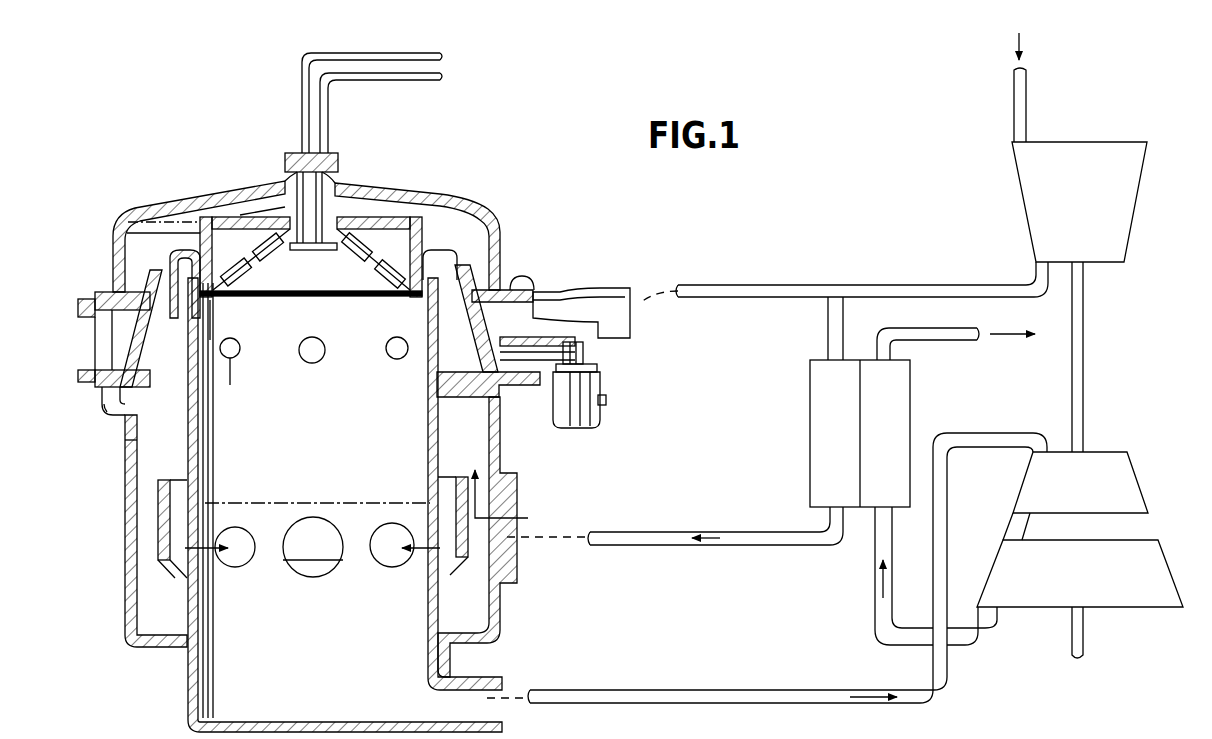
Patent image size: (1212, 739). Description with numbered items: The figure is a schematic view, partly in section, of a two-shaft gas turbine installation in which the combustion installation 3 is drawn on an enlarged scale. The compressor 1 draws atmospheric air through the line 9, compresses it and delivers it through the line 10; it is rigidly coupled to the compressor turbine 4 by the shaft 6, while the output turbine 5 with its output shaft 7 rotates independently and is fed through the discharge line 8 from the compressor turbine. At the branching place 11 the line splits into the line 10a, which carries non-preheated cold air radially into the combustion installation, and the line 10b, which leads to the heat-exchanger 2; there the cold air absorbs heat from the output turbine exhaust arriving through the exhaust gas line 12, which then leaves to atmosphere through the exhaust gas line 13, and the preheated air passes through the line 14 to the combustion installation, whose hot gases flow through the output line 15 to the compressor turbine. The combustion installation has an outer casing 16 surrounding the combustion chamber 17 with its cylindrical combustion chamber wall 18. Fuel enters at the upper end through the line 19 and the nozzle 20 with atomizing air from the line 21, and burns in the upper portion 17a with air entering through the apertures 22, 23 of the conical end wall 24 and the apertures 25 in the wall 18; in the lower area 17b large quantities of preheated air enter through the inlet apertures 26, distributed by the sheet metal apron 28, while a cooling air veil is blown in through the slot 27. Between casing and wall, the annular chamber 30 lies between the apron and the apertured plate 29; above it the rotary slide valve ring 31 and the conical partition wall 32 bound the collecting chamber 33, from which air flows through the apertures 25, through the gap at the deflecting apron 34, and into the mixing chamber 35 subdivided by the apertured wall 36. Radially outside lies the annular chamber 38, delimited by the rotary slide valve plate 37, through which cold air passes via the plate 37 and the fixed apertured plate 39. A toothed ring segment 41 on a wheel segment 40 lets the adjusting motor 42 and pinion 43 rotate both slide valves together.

The compressor 1 is at (1022, 174).
The heat-exchanger 2 is at (811, 395).
The combustion installation 3 is at (439, 165).
The compressor turbine 4 is at (1140, 485).
The output turbine 5 is at (1175, 580).
The shaft 6 is at (1083, 365).
The output shaft 7 is at (1085, 637).
The discharge line 8 is at (1005, 528).
The air intake line 9 is at (1028, 122).
The compressor feed line 10 is at (978, 285).
The cold air line 10a is at (758, 285).
The heat-exchanger feed line 10b is at (828, 318).
The branching place 11 is at (845, 290).
The exhaust gas line 12 is at (893, 620).
The exhaust gas line 13 is at (943, 340).
The preheated air line 14 is at (675, 546).
The output line 15 is at (698, 688).
The outer casing 16 is at (503, 240).
The combustion chamber 17 is at (317, 483).
The upper portion 17a is at (313, 407).
The lower adjoining area 17b is at (326, 650).
The combustion chamber wall 18 is at (440, 442).
The fuel line 19 is at (425, 82).
The nozzle 20 is at (338, 186).
The atomizing air line 21 is at (430, 55).
The through apertures 22 is at (283, 253).
The through apertures 23 is at (358, 298).
The combustion chamber end wall 24 is at (250, 270).
The apertures 25 is at (325, 342).
The inlet apertures 26 is at (305, 573).
The ring-shaped axially directed slot 27 is at (214, 322).
The sheet metal apron 28 is at (160, 487).
The apertured plate 29 is at (107, 412).
The annular chamber 30 is at (125, 450).
The rotary slide valve ring 31 is at (100, 392).
The conical partition wall 32 is at (140, 338).
The annular chamber 33 is at (155, 355).
The deflecting apron 34 is at (187, 252).
The mixing chamber 35 is at (385, 230).
The apertured wall 36 is at (235, 205).
The rotary slide valve plate 37 is at (100, 296).
The annular chamber 38 is at (100, 350).
The apertured plate 39 is at (522, 283).
The wheel segment 40 is at (505, 345).
The toothed ring segment 41 is at (555, 340).
The adjusting motor 42 is at (600, 415).
The pinion 43 is at (590, 355).